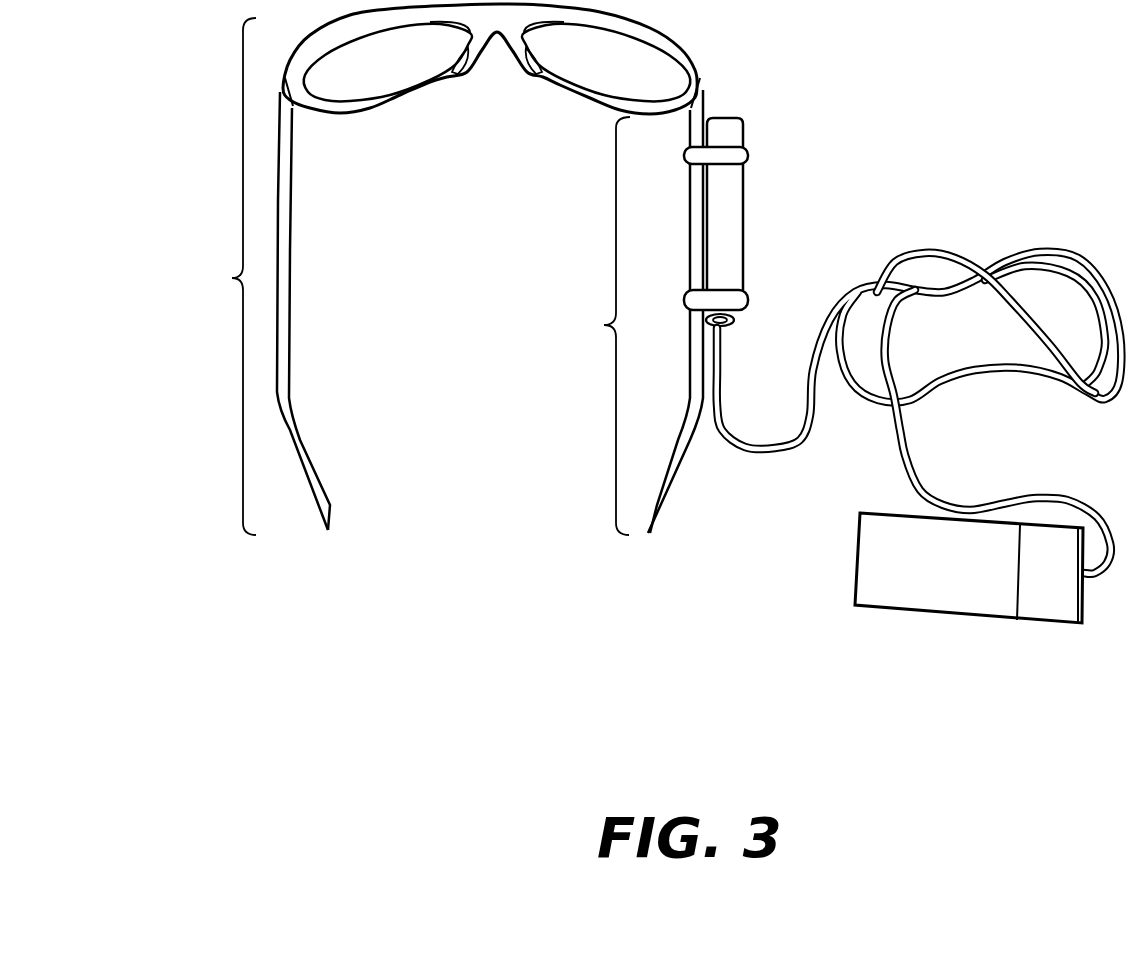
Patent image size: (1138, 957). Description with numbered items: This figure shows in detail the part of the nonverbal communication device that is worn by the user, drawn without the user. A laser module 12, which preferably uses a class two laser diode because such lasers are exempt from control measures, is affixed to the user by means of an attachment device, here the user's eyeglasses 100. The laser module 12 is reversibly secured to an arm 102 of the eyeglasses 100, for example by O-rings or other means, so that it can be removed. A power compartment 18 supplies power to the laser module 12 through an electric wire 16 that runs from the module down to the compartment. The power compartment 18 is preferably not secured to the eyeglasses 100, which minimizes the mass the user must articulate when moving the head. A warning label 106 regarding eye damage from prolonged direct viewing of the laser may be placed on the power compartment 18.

The eyeglasses 100 is at (439, 269).
The arm 102 is at (628, 312).
The laser module 12 is at (727, 214).
The electric wire 16 is at (955, 255).
The warning label 106 is at (900, 533).
The power compartment 18 is at (955, 557).